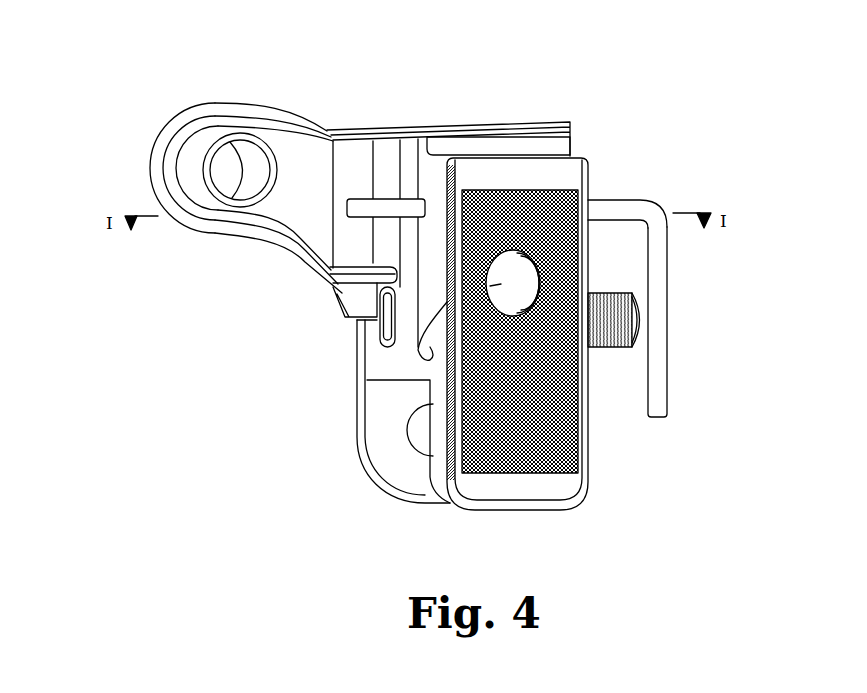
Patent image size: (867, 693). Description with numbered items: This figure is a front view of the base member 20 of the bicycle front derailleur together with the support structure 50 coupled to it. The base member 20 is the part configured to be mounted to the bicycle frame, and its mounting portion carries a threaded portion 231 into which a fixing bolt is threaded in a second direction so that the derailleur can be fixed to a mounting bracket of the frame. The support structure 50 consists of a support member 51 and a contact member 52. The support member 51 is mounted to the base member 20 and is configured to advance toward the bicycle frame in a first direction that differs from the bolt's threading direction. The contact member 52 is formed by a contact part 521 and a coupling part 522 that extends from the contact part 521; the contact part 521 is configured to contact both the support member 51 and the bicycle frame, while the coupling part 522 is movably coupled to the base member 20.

The base member 20 is at (478, 112).
The threaded portion 231 is at (395, 372).
The support structure 50 is at (683, 327).
The support member 51 is at (612, 350).
The contact member 52 is at (683, 304).
The contact part 521 is at (617, 212).
The coupling part 522 is at (658, 300).